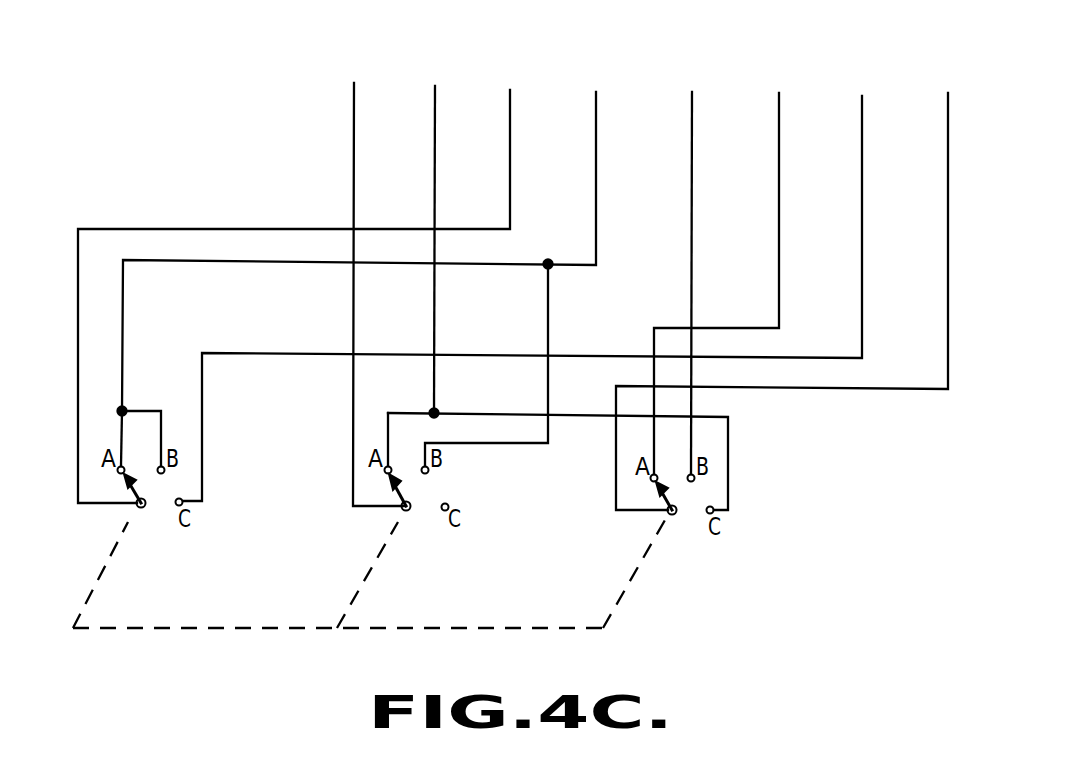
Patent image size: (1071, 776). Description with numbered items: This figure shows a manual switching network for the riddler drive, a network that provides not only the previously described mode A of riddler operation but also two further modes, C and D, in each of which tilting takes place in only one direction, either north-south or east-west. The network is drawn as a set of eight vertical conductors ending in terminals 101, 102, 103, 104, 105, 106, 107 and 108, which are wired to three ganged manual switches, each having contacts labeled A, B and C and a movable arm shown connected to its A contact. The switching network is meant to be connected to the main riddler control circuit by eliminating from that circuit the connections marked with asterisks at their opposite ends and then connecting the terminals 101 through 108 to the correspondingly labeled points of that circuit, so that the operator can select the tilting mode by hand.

The terminal 101 is at (353, 166).
The terminal 102 is at (434, 166).
The terminal 103 is at (509, 166).
The terminal 104 is at (595, 166).
The terminal 105 is at (691, 170).
The terminal 106 is at (778, 170).
The terminal 107 is at (861, 170).
The terminal 108 is at (947, 170).